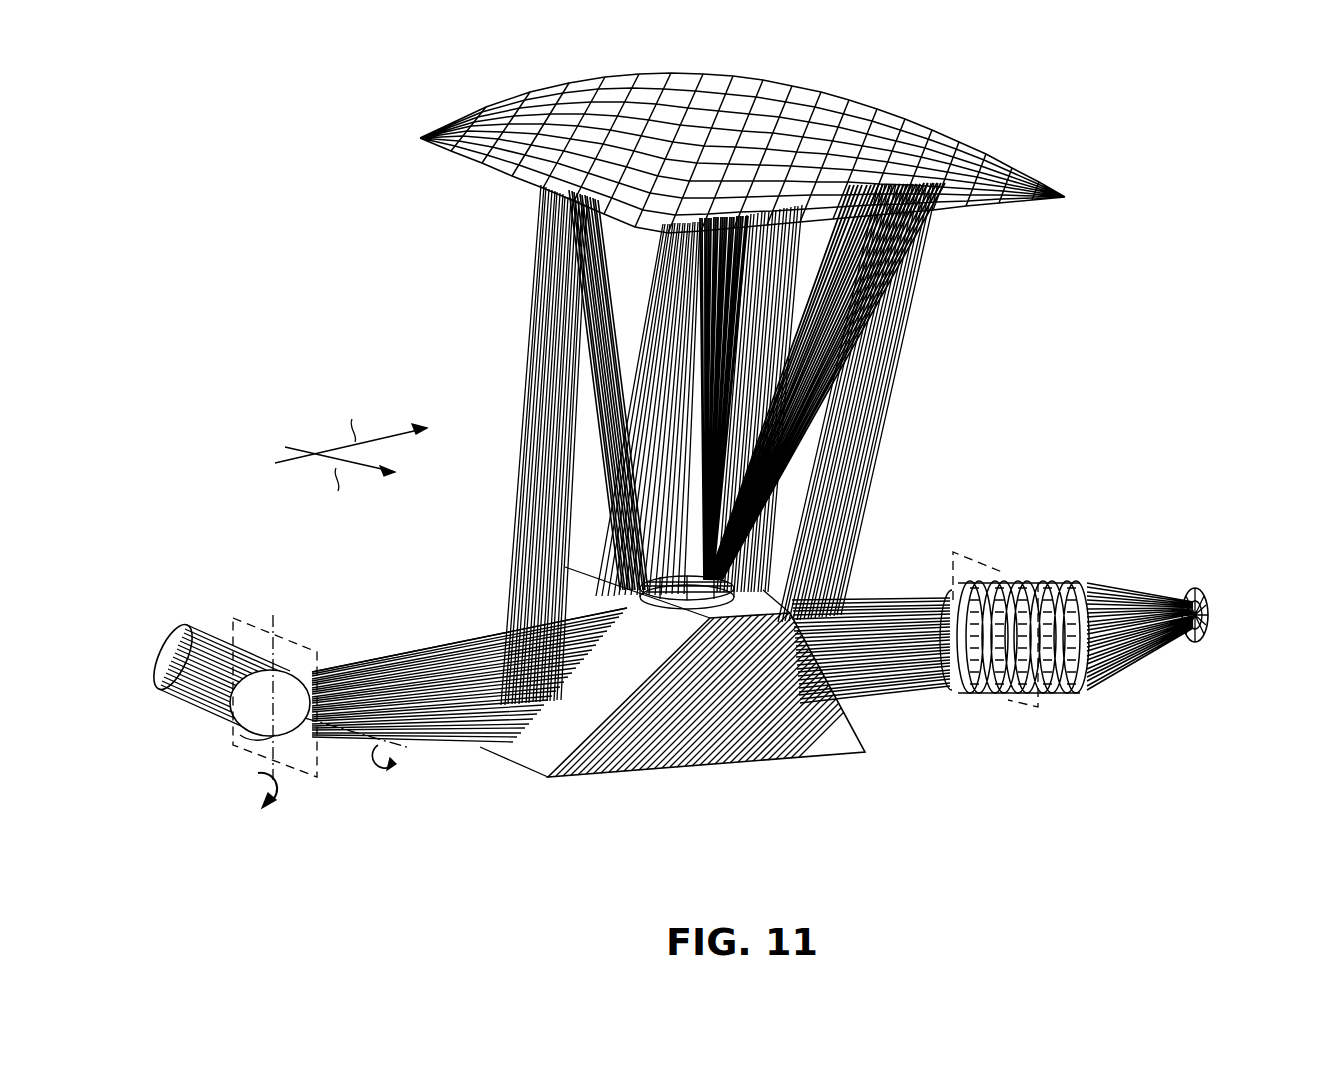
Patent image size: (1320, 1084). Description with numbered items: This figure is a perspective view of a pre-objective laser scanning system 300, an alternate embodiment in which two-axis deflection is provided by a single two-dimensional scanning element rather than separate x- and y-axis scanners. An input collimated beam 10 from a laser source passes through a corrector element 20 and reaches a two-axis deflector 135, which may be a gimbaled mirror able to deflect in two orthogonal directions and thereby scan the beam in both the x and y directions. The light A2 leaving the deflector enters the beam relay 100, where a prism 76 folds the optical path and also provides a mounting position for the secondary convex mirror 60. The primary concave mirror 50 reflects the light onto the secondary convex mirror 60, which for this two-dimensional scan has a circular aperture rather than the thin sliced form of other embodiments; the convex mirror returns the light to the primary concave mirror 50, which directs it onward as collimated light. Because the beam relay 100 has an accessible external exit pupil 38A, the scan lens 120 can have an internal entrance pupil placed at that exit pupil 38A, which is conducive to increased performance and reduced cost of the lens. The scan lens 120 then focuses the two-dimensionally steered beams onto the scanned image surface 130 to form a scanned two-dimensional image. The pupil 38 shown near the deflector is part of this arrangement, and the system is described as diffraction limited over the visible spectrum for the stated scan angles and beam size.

The input collimated beam 10 is at (156, 645).
The corrector element 20 is at (184, 628).
The rotation axis 38 is at (308, 778).
The exit pupil 38A is at (994, 567).
The primary concave mirror 50 is at (962, 173).
The secondary convex mirror 60 is at (673, 570).
The prism 76 is at (548, 779).
The beam relay 100 is at (1046, 321).
The scan lens 120 is at (1097, 700).
The scanned image surface 130 is at (1207, 643).
The two-axis deflector 135 is at (241, 731).
The pre-objective laser scanning system 300 is at (193, 261).
The light reflected from the scanning element A2 is at (428, 643).